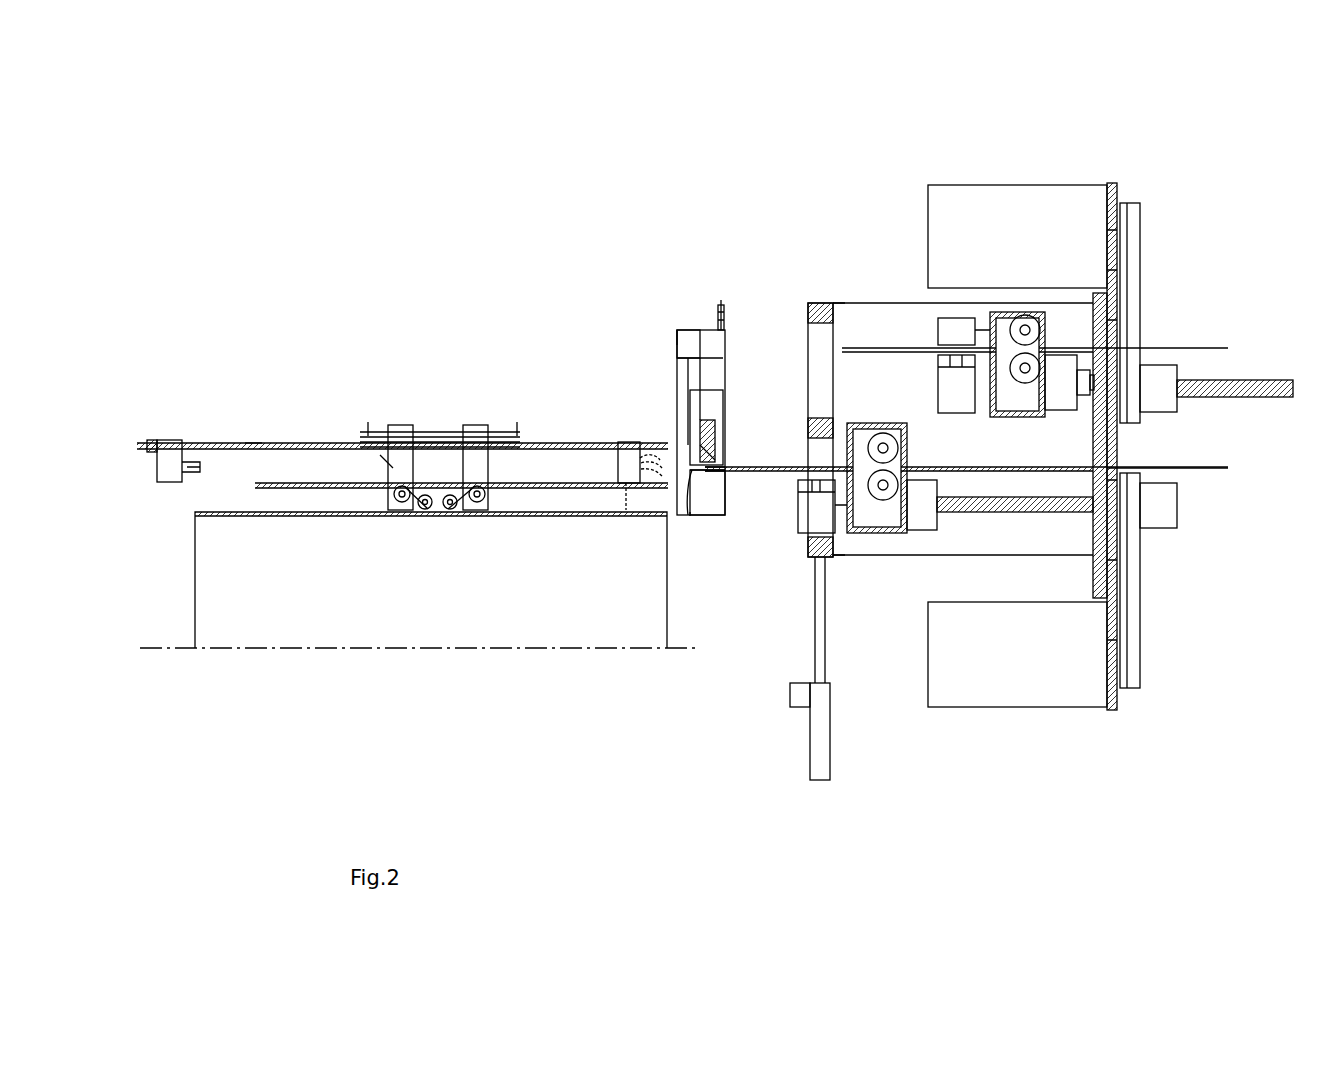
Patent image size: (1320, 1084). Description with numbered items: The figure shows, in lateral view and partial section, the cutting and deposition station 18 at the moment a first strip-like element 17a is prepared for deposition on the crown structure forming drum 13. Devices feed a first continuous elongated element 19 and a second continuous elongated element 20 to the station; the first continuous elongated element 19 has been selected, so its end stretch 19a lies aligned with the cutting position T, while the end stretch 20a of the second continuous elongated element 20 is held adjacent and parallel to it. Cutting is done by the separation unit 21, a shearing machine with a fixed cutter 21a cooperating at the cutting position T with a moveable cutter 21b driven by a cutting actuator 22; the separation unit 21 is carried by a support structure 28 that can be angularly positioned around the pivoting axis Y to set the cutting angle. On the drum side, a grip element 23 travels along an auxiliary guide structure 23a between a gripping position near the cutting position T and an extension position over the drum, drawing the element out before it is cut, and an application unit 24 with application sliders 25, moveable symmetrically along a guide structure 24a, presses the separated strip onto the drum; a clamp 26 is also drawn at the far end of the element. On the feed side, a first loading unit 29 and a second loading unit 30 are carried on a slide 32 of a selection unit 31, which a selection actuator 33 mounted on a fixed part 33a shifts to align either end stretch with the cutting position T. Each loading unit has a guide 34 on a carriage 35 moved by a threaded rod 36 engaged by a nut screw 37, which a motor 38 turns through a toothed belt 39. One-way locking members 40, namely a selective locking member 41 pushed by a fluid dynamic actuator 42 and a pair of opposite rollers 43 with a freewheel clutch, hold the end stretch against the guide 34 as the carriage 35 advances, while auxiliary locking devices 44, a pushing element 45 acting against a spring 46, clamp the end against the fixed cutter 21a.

The crown structure forming drum 13 is at (405, 600).
The first strip-like element 17a is at (302, 443).
The cutting and deposition station 18 is at (520, 245).
The first continuous elongated element 19 is at (1215, 468).
The end stretch of the first continuous elongated element 19a is at (765, 467).
The second continuous elongated element 20 is at (1210, 348).
The end stretch of the second continuous elongated element 20a is at (858, 347).
The separation unit 21 is at (663, 350).
The fixed cutter 21a is at (712, 497).
The moveable cutter 21b is at (678, 417).
The cutting actuator 22 is at (683, 330).
The grip element 23 is at (173, 443).
The auxiliary guide structure 23a is at (253, 443).
The application unit 24 is at (405, 425).
The guide structure 24a is at (497, 428).
The application sliders 25 is at (478, 425).
The clamp 26 is at (150, 440).
The support structure 28 is at (703, 328).
The first loading unit 29 is at (1170, 565).
The second loading unit 30 is at (1180, 275).
The selection unit 31 is at (845, 592).
The slide 32 is at (820, 303).
The selection actuator 33 is at (818, 765).
The fixed part 33a is at (793, 693).
The guide 34 is at (938, 356).
The carriage 35 is at (1060, 408).
The threaded rod 36 is at (1245, 382).
The nut screw 37 is at (1177, 525).
The motor 38 is at (1022, 217).
The toothed belt 39 is at (1130, 290).
The one-way locking members 40 is at (1010, 312).
The selective locking member 41 is at (940, 332).
The fluid dynamic actuator 42 is at (955, 385).
The pair of opposite rollers 43 is at (1030, 366).
The auxiliary locking devices 44 is at (724, 462).
The pushing element 45 is at (700, 455).
The spring 46 is at (718, 445).
The cutting position T is at (690, 514).
The pivoting axis Y is at (722, 300).